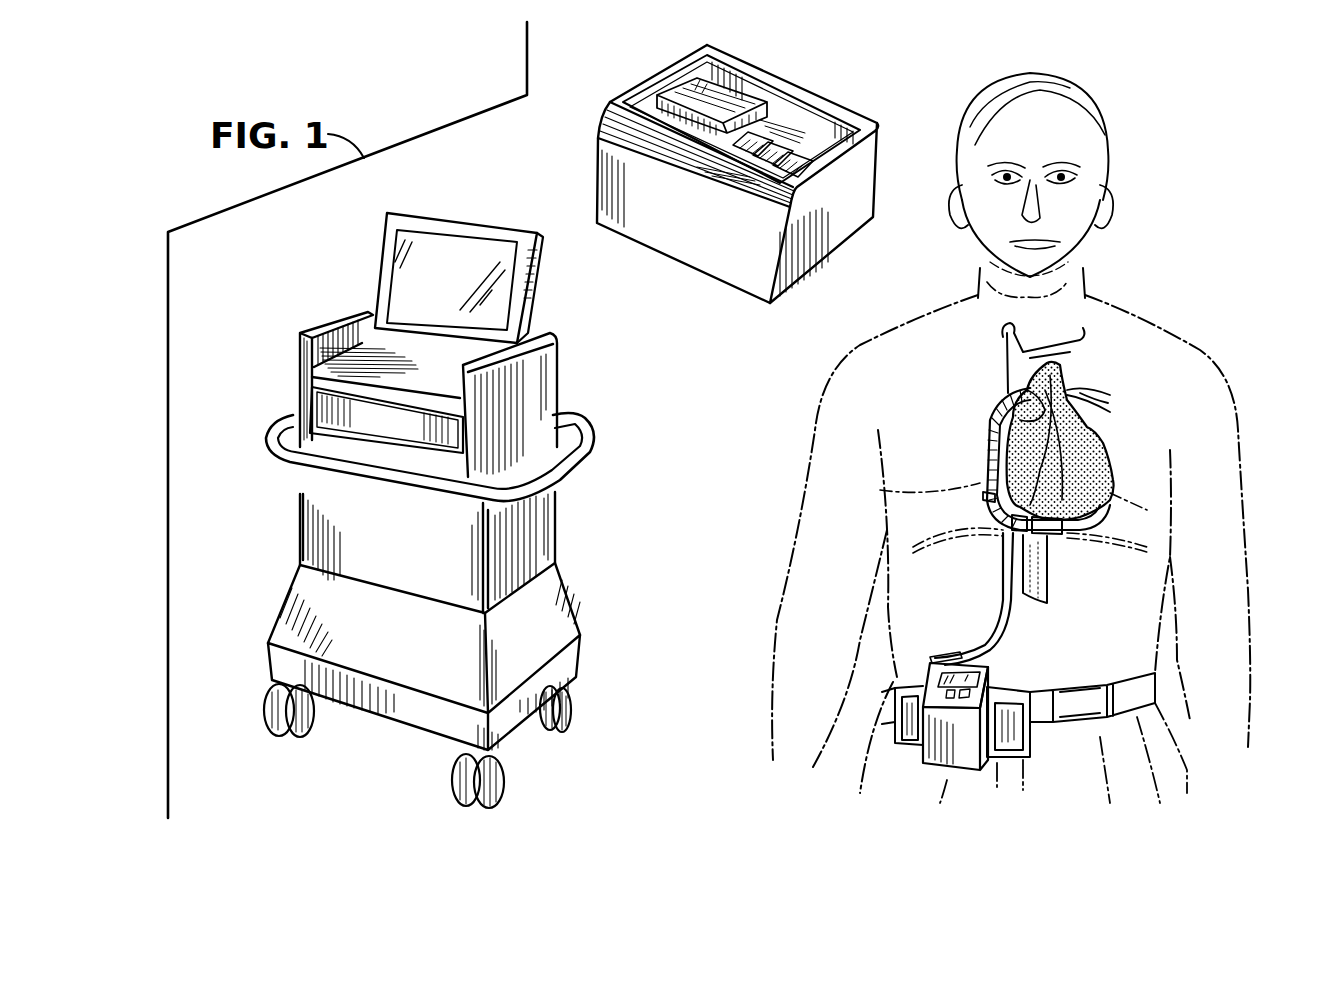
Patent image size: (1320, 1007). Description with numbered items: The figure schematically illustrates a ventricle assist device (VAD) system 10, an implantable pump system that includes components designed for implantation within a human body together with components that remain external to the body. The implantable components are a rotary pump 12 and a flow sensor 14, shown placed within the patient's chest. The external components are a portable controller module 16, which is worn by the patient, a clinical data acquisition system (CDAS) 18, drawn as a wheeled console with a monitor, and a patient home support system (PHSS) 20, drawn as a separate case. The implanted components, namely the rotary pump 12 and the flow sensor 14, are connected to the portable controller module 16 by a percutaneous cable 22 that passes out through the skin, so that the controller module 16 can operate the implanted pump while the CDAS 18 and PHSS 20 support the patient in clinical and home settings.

The ventricle assist device (VAD) system 10 is at (540, 209).
The rotary pump 12 is at (1090, 453).
The flow sensor 14 is at (985, 497).
The portable controller module 16 is at (923, 773).
The clinical data acquisition system (CDAS) 18 is at (297, 417).
The patient home support system (PHSS) 20 is at (862, 155).
The percutaneous cable 22 is at (997, 593).